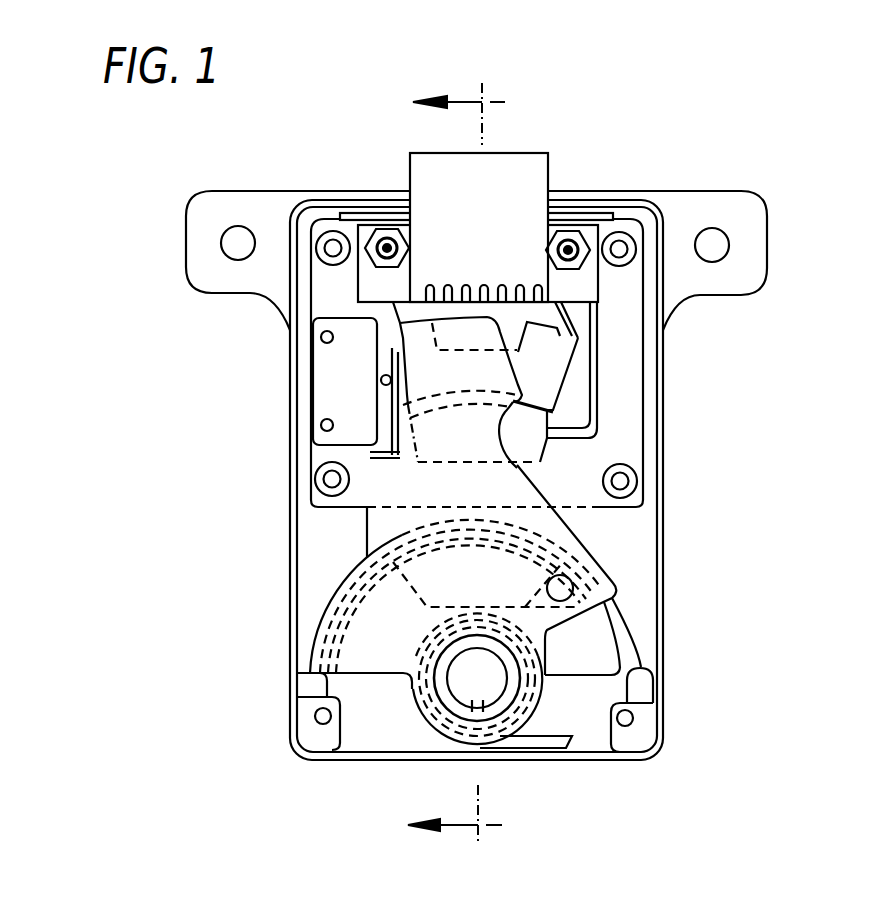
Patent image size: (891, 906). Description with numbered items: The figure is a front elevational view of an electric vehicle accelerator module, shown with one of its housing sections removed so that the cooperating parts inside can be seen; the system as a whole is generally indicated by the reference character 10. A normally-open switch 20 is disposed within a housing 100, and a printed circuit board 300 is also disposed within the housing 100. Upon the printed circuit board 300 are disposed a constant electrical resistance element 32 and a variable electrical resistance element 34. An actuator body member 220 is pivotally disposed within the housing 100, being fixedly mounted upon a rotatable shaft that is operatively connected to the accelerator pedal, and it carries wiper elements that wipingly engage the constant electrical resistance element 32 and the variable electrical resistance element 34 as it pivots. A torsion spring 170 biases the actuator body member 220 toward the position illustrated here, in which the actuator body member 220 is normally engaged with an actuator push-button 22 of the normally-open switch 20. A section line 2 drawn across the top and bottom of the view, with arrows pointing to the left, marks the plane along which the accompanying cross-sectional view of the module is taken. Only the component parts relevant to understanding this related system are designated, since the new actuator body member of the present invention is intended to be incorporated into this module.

The system 10 is at (829, 200).
The section line 2- 2 is at (458, 466).
The housing 100 is at (607, 191).
The actuator body member 220 is at (400, 475).
The normally-open switch 20 is at (347, 383).
The actuator push-button 22 is at (380, 378).
The printed circuit board 300 is at (622, 377).
The variable electrical resistance element 34 is at (540, 358).
The constant electrical resistance element 32 is at (515, 423).
The torsion spring 170 is at (412, 703).